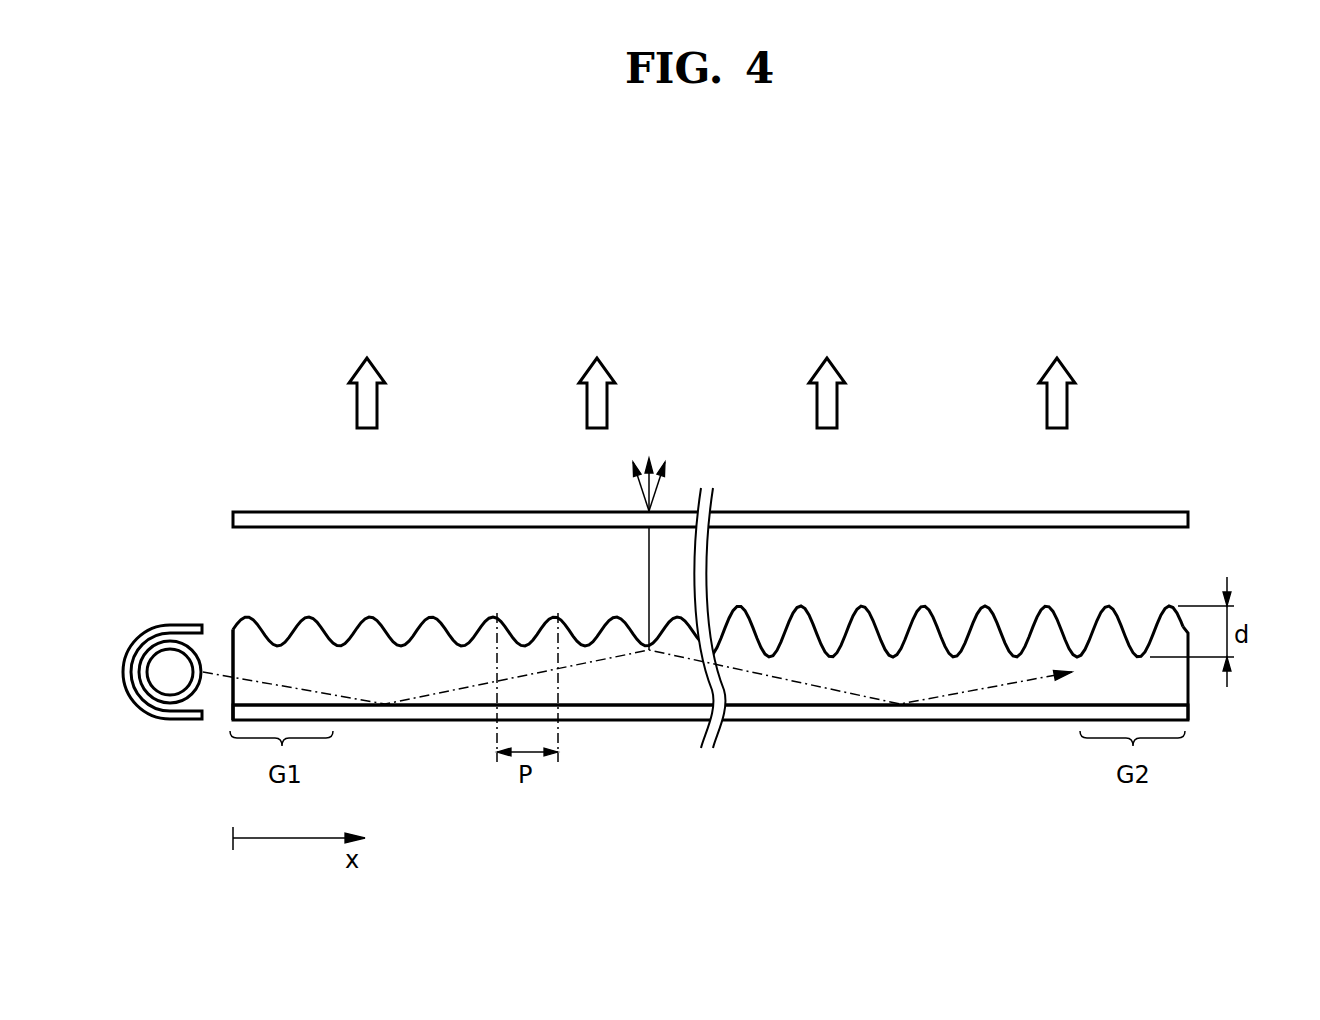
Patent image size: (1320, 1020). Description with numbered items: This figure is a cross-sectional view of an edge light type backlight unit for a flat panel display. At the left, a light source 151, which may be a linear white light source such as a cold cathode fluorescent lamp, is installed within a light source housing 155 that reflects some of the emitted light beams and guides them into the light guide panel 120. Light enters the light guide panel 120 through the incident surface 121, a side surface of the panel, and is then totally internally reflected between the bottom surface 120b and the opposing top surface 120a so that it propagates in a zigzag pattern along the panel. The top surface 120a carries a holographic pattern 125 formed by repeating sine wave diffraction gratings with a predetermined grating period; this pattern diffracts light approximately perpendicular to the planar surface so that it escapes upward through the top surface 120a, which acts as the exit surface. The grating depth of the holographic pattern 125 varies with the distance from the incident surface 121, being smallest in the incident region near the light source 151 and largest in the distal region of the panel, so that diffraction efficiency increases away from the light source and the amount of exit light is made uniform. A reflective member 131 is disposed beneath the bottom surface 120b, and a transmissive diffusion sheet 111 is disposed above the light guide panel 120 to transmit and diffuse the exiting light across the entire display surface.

The transmissive diffusion sheet 111 is at (1183, 521).
The light guide panel 120 is at (719, 652).
The top surface 120a is at (755, 586).
The bottom surface 120b is at (788, 708).
The incident surface 121 is at (232, 641).
The holographic pattern 125 is at (1146, 587).
The reflective member 131 is at (890, 713).
The light source 151 is at (170, 698).
The light source housing 155 is at (133, 702).